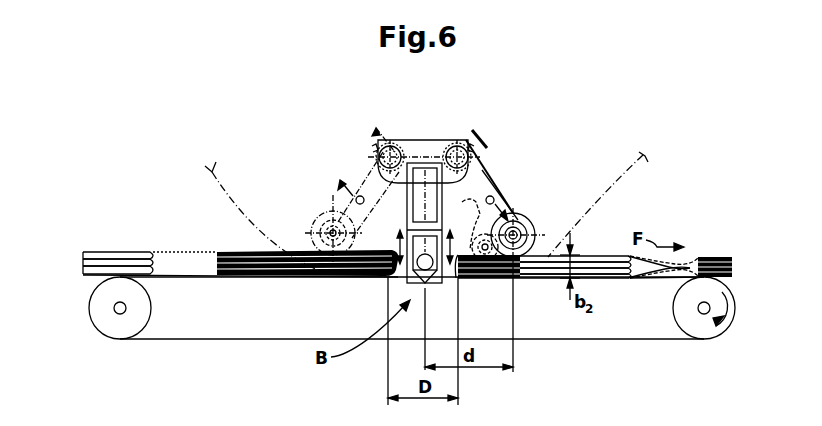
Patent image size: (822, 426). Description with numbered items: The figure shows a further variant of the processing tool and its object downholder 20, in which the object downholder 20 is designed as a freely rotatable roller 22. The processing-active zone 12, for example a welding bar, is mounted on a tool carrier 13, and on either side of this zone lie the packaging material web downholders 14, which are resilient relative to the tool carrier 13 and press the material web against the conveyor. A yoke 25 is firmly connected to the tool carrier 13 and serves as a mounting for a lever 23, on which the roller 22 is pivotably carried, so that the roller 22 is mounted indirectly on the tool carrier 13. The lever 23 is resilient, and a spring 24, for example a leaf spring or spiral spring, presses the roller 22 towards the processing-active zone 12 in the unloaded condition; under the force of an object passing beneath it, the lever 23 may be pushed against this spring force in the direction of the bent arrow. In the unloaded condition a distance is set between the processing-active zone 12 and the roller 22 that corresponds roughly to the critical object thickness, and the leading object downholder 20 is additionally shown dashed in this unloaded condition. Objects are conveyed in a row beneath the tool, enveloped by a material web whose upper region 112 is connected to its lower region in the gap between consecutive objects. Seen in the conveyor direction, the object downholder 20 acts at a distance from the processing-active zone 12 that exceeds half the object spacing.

The processing-active zone 12 is at (425, 288).
The tool carrier 13 is at (420, 172).
The packaging material web downholder 14 is at (390, 283).
The object downholder 20 is at (532, 217).
The roller 22 is at (545, 240).
The lever 23 is at (483, 185).
The spring 24 is at (470, 143).
The yoke 25 is at (418, 148).
The upper region of the material web 112 is at (620, 232).